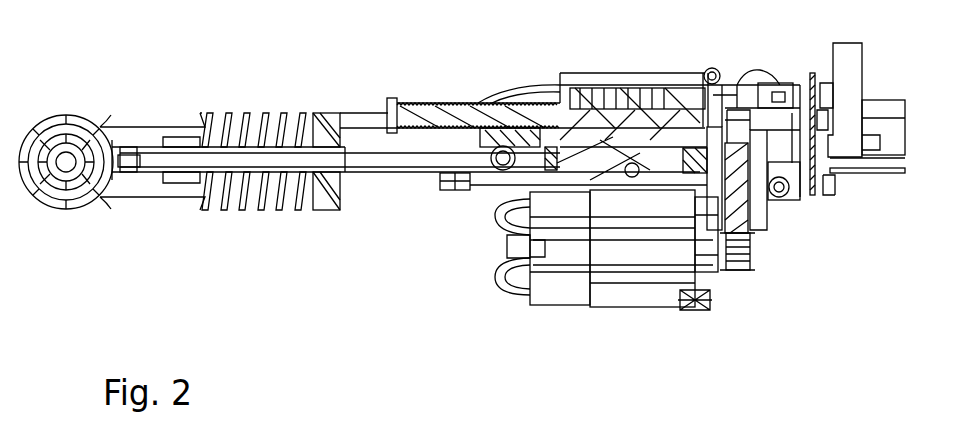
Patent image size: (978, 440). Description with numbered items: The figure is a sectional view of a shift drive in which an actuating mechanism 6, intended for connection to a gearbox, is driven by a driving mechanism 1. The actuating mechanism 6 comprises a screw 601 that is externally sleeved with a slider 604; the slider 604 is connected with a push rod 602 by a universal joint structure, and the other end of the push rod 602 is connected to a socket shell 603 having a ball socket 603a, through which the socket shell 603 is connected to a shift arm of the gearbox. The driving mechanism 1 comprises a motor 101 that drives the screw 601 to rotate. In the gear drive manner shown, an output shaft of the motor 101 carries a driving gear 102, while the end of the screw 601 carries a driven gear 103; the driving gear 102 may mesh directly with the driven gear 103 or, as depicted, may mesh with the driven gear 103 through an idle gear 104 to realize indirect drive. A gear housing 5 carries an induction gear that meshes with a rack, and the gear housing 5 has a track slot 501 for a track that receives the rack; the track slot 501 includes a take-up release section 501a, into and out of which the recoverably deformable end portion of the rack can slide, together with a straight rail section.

The driving mechanism 1 is at (727, 293).
The gear housing 5 is at (526, 100).
The actuating mechanism 6 is at (387, 98).
The motor 101 is at (645, 300).
The driving gear 102 is at (752, 262).
The driven gear 103 is at (731, 87).
The idle gear 104 is at (757, 214).
The track slot 501 is at (511, 103).
The take-up release section 501a is at (457, 192).
The screw 601 is at (436, 100).
The push rod 602 is at (396, 173).
The socket shell 603 is at (81, 116).
The ball socket 603a is at (86, 207).
The slider 604 is at (670, 75).